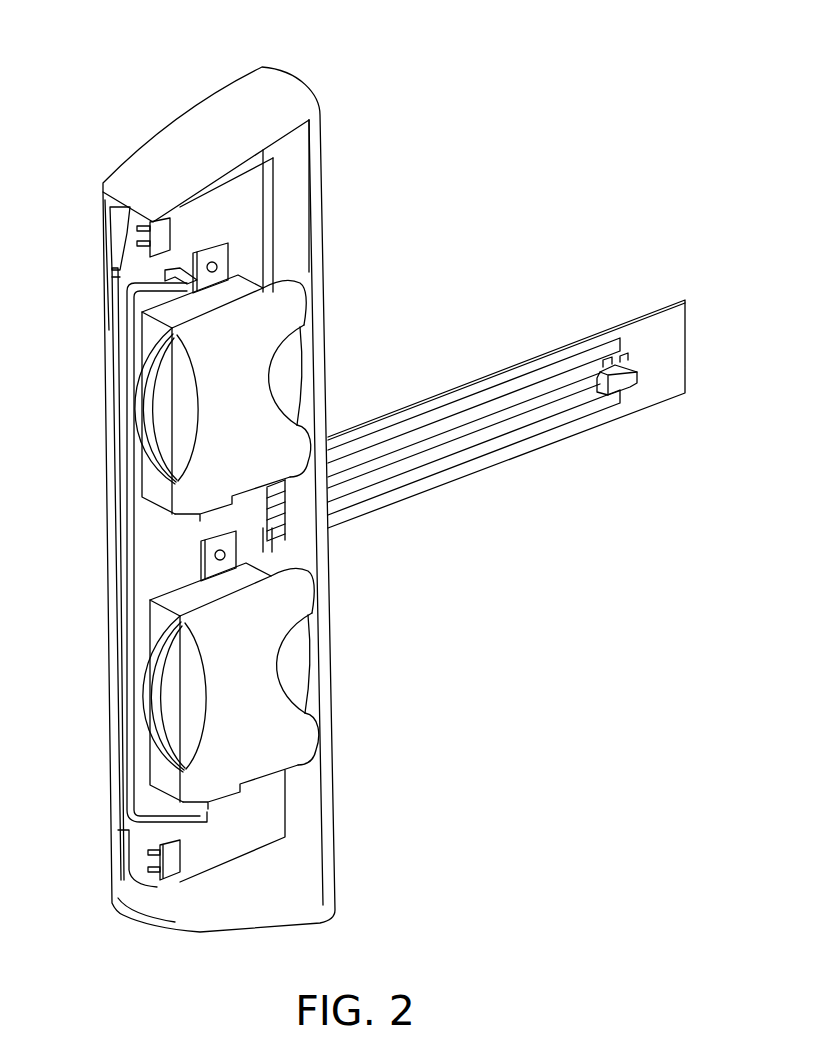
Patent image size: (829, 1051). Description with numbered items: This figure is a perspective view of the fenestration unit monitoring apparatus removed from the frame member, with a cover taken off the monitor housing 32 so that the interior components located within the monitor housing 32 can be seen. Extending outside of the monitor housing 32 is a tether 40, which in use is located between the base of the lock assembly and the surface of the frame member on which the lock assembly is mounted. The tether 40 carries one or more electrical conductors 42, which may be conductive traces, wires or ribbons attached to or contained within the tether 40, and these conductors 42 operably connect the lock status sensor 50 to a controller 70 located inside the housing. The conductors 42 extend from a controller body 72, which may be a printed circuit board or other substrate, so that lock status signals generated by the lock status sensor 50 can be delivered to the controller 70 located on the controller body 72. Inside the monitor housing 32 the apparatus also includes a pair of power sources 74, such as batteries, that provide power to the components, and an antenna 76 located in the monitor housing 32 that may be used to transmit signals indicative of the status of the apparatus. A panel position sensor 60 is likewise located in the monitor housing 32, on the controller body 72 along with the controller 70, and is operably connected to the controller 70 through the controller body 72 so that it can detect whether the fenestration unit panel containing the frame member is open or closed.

The monitor housing 32 is at (222, 87).
The tether 40 is at (542, 352).
The electrical conductors 42 is at (507, 437).
The lock status sensor 50 is at (647, 363).
The panel position sensor 60 is at (148, 240).
The controller 70 is at (115, 268).
The controller body 72 is at (243, 213).
The power sources 74 is at (290, 368).
The antenna 76 is at (127, 788).